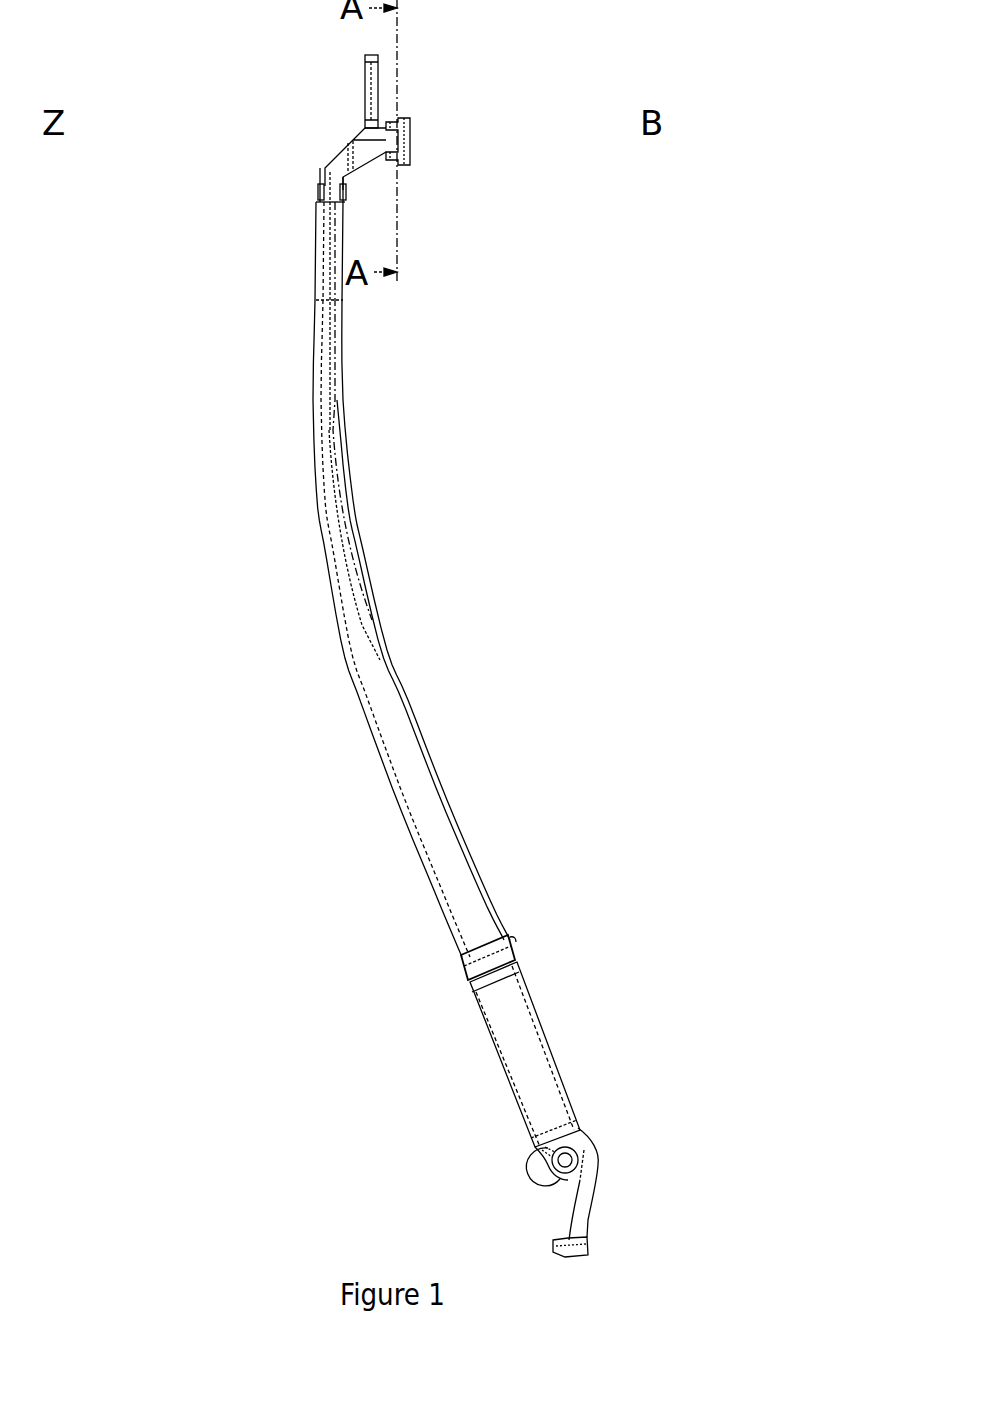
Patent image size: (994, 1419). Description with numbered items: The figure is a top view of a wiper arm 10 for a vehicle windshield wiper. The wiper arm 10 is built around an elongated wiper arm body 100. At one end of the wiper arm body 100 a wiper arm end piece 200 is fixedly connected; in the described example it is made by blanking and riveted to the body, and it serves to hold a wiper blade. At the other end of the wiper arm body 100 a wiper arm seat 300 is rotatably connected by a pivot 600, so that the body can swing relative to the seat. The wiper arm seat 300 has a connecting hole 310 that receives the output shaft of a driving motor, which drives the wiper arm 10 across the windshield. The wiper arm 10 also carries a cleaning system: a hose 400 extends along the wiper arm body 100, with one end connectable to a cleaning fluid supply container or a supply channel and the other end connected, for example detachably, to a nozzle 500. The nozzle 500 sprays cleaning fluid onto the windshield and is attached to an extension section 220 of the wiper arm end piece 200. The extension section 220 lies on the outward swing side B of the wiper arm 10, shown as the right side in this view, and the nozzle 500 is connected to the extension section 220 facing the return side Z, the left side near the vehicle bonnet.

The wiper arm 10 is at (266, 465).
The wiper arm body 100 is at (335, 377).
The wiper arm end piece 200 is at (323, 172).
The extension section 220 is at (375, 141).
The wiper arm seat 300 is at (527, 1098).
The connecting hole 310 is at (555, 1163).
The hose 400 is at (590, 1192).
The nozzle 500 is at (410, 153).
The pivot 600 is at (513, 948).